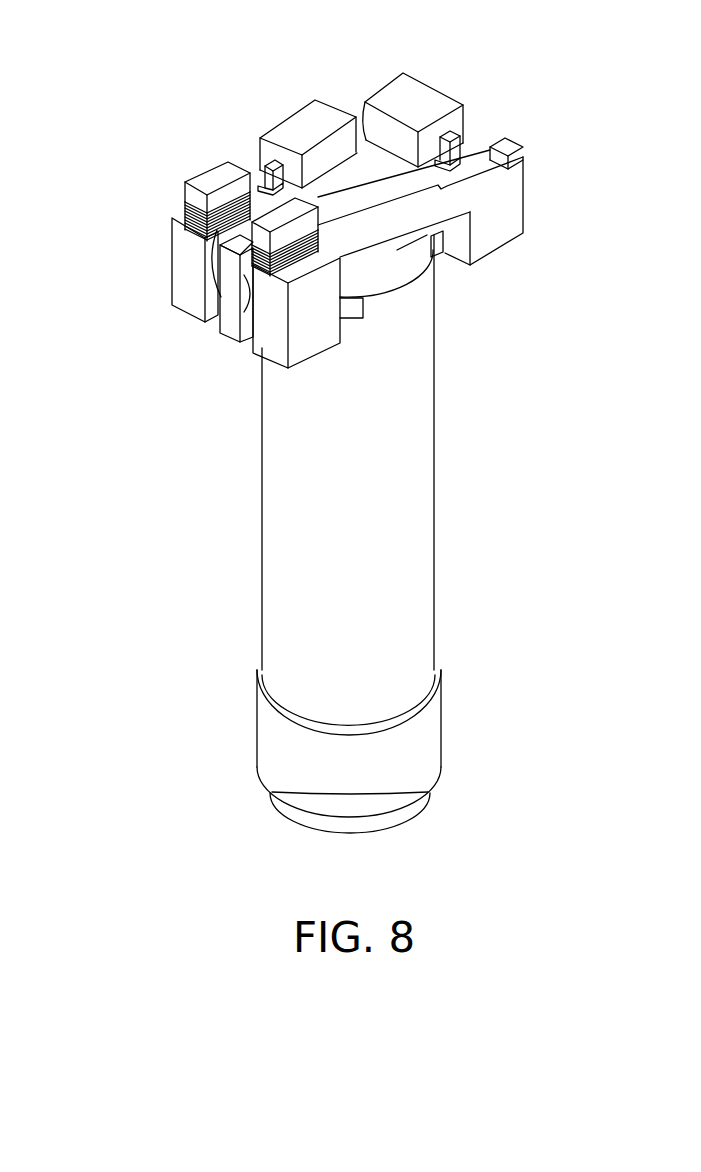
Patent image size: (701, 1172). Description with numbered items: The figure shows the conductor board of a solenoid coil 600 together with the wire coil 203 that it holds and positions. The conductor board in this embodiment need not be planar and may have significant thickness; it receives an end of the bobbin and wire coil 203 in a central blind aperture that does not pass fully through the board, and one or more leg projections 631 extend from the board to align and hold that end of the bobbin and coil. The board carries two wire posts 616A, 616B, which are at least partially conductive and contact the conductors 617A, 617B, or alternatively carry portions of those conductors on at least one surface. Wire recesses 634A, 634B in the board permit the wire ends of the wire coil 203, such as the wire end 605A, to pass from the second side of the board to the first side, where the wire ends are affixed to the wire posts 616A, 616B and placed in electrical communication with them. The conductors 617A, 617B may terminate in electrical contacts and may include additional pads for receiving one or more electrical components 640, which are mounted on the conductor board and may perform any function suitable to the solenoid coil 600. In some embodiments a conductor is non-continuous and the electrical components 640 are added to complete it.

The wire coil 203 is at (435, 547).
The solenoid coil 600 is at (140, 732).
The wire end 605A is at (167, 281).
The wire post 616A is at (203, 177).
The wire post 616B is at (300, 226).
The conductor 617A is at (258, 179).
The conductor 617B is at (483, 143).
The leg projection 631 is at (536, 206).
The wire recess 634A is at (189, 291).
The wire recess 634B is at (234, 311).
The electrical component 640 is at (293, 110).